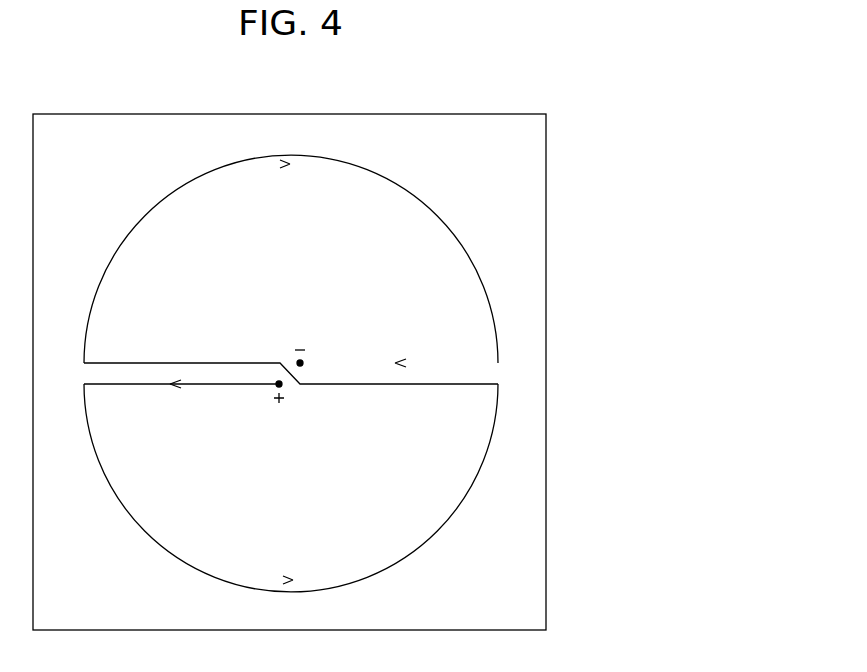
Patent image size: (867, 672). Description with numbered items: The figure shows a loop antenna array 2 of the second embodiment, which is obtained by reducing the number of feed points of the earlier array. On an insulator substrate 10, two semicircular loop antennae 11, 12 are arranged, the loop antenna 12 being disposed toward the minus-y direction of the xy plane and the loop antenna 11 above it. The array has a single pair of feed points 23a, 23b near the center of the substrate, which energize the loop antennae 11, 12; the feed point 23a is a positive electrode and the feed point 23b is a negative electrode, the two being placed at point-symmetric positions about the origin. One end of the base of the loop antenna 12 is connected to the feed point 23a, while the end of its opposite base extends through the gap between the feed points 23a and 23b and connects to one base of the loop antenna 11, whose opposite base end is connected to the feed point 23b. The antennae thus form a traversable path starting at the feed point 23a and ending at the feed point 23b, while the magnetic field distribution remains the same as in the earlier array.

The loop antenna array 2 is at (347, 106).
The insulator substrate 10 is at (546, 173).
The loop antenna 11 is at (145, 225).
The loop antenna 12 is at (168, 538).
The feed point 23a is at (277, 386).
The feed point 23b is at (303, 361).